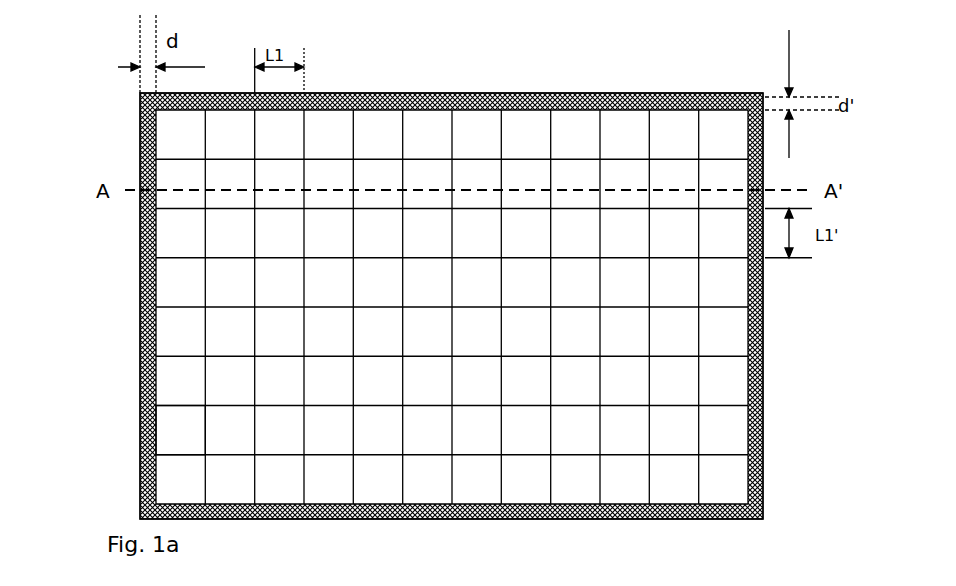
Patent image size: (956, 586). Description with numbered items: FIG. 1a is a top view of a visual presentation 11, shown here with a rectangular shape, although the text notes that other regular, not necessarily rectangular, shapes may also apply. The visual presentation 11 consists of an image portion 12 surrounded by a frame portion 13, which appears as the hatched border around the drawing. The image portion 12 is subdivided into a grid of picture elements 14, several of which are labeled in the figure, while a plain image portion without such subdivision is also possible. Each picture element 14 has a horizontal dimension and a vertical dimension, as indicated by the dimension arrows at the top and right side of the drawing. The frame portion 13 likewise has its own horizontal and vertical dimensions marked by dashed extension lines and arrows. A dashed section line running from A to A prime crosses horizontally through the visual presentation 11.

The visual presentation 11 is at (495, 73).
The image portion 12 is at (172, 425).
The frame portion 13 is at (130, 235).
The picture elements 14 is at (452, 307).